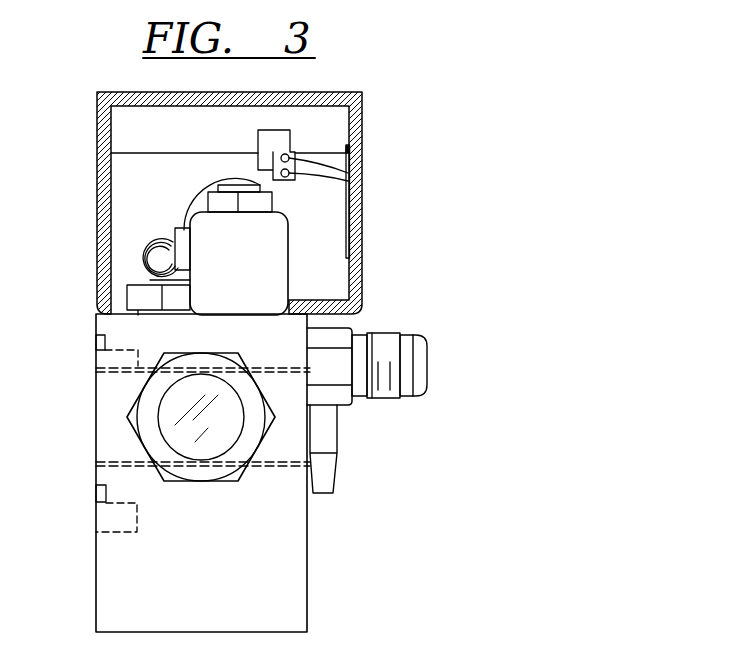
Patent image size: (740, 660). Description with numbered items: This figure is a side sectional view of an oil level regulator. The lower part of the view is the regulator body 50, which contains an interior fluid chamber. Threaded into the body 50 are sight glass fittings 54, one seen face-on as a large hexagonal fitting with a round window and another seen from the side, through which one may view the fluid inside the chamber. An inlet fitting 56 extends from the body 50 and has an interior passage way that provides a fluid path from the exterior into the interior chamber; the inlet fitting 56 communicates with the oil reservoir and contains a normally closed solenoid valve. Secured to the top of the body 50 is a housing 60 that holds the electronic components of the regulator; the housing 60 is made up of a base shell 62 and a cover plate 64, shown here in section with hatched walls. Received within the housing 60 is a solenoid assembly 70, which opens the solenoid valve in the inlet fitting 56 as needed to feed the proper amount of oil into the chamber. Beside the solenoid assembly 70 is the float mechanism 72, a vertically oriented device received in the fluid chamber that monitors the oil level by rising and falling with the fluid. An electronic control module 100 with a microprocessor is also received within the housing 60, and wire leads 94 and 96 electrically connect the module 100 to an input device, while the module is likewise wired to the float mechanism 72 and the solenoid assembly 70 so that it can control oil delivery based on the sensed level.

The body 50 is at (308, 533).
The sight glass fittings 54 is at (190, 483).
The inlet fitting 56 is at (387, 329).
The housing 60 is at (362, 144).
The base shell 62 is at (97, 152).
The cover plate 64 is at (117, 99).
The solenoid assembly 70 is at (289, 283).
The float mechanism 72 is at (140, 285).
The wire lead 94 is at (289, 174).
The wire lead 96 is at (362, 175).
The electronic control module 100 is at (352, 258).